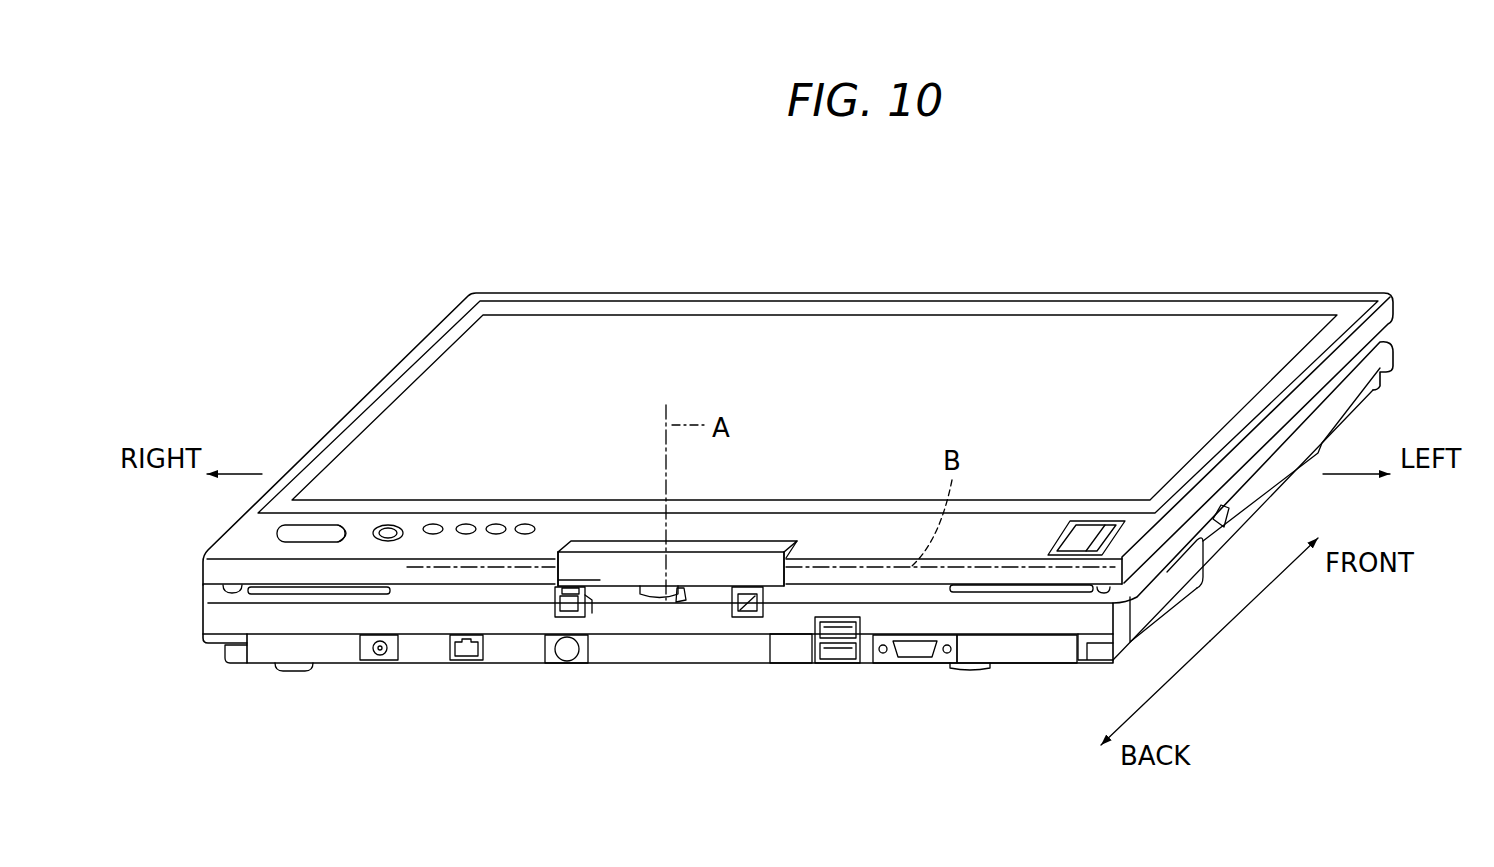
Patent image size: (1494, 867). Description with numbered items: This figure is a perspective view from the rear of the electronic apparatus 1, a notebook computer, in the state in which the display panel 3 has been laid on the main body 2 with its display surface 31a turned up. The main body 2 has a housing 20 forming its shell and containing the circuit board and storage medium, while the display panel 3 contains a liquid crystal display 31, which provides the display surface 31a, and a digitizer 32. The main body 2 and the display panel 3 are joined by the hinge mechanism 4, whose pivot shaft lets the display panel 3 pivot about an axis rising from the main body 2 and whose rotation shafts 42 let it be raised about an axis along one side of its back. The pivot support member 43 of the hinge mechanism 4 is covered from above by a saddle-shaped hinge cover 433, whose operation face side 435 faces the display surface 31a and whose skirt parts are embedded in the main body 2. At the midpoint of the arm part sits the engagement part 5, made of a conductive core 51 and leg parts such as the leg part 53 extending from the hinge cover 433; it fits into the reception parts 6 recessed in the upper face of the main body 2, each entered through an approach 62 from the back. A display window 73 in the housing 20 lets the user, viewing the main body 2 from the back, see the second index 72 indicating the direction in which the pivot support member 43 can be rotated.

The electronic apparatus 1 is at (1058, 264).
The main body 2 is at (325, 661).
The display panel 3 is at (596, 290).
The hinge mechanism 4 is at (600, 535).
The engagement part 5 is at (568, 575).
The reception parts 6 is at (546, 611).
The housing 20 is at (215, 622).
The liquid crystal display 31 is at (906, 330).
The display surface 31a is at (703, 343).
The digitizer 32 is at (800, 327).
The rotation shafts 42 is at (495, 560).
The pivot support member 43 is at (733, 537).
The hinge cover 433 is at (766, 556).
The operation face side 435 is at (713, 575).
The core 51 is at (587, 598).
The leg part 53 is at (551, 598).
The approach 62 is at (567, 600).
The second index 72 is at (660, 601).
The display window 73 is at (679, 604).